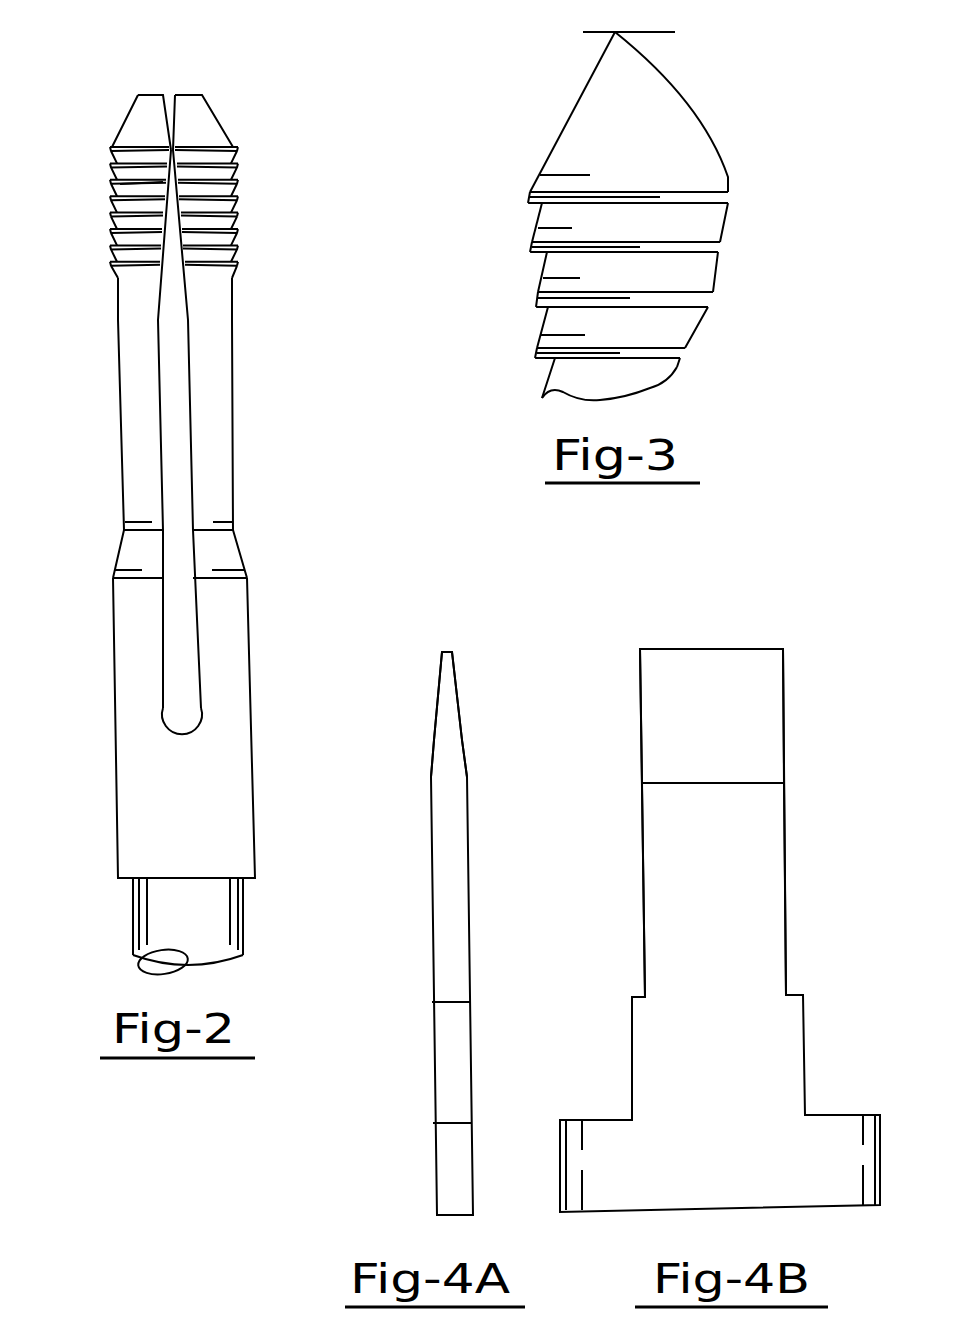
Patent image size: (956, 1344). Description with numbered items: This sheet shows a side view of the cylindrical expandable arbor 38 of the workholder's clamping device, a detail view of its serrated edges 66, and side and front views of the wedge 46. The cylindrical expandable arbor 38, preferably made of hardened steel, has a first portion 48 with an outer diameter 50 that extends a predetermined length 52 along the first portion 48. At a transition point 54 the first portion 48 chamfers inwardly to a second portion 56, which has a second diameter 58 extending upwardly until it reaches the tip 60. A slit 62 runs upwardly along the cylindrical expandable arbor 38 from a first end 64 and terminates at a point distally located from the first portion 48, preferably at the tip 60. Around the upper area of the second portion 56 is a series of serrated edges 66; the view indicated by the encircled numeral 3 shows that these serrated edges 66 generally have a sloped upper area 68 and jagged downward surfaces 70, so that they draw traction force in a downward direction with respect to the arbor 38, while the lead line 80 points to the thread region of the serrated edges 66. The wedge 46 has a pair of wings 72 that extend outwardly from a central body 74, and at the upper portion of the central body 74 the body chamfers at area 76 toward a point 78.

In FIG. 2, the view indicator for FIG. 3 is at (142, 216).
In FIG. 2, the cylindrical expandable arbor 38 is at (292, 682).
In FIG. 4A, the wedge 46 is at (423, 861).
In FIG. 4B, the wedge 46 is at (633, 875).
In FIG. 2, the first portion 48 is at (225, 795).
In FIG. 2, the outer diameter 50 is at (252, 839).
In FIG. 2, the predetermined length 52 is at (57, 581).
In FIG. 2, the transition point 54 is at (113, 578).
In FIG. 2, the second portion 56 is at (220, 444).
In FIG. 2, the second diameter 58 is at (80, 379).
In FIG. 2, the tip 60 is at (203, 135).
In FIG. 2, the slit 62 is at (209, 652).
In FIG. 2, the first end 64 is at (205, 715).
In FIG. 2, the serrated edges 66 is at (231, 195).
In FIG. 3, the serrated edges 66 is at (521, 179).
In FIG. 3, the sloped upper area 68 is at (558, 135).
In FIG. 3, the jagged downward surfaces 70 is at (537, 208).
In FIG. 4B, the wings 72 is at (601, 1118).
In FIG. 4B, the central body 74 is at (750, 885).
In FIG. 4A, the area 76 is at (448, 700).
In FIG. 4B, the area 76 is at (663, 713).
In FIG. 4A, the point 78 is at (447, 650).
In FIG. 4B, the point 78 is at (728, 646).
In FIG. 2, the thread root 80 is at (120, 184).